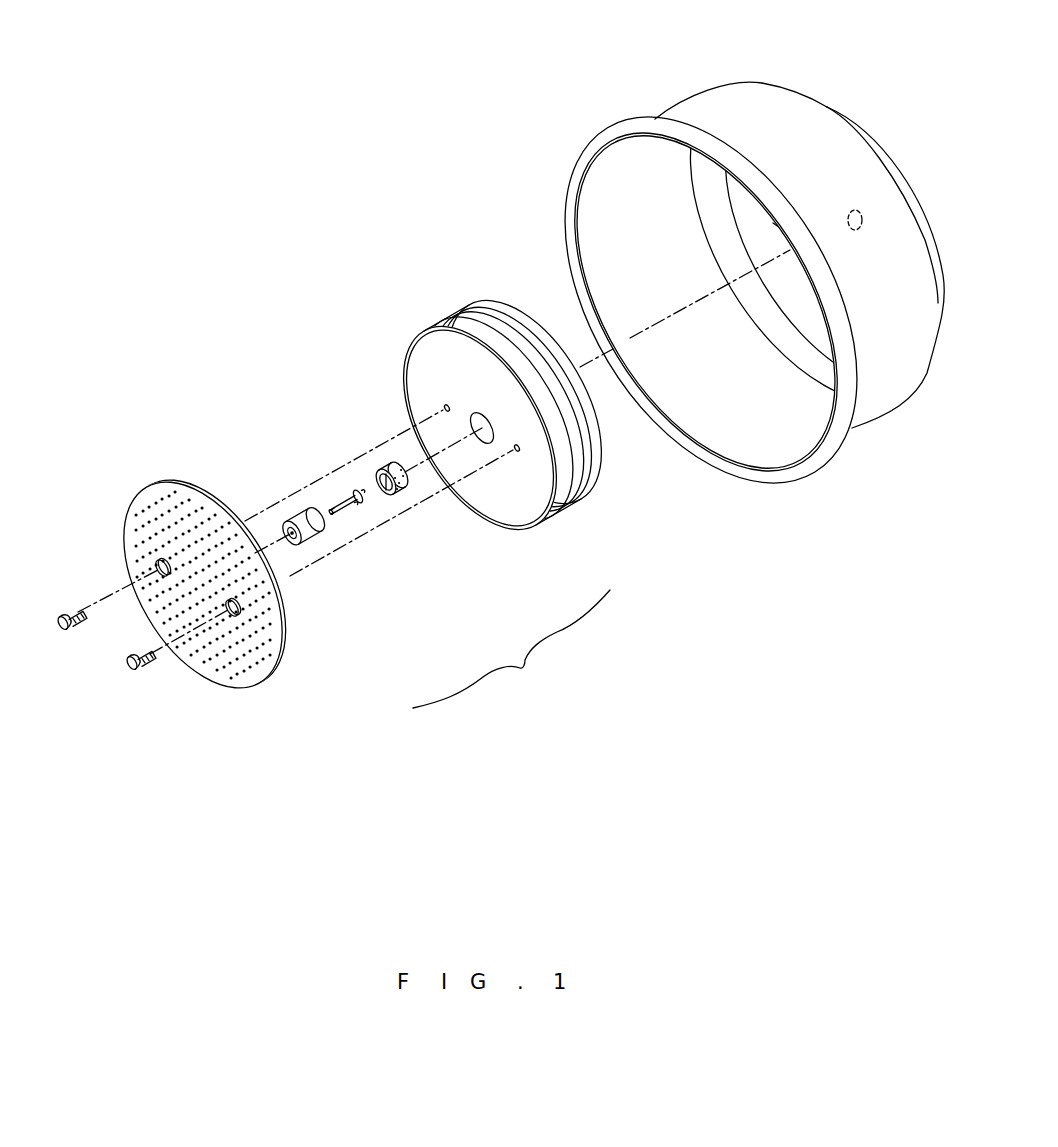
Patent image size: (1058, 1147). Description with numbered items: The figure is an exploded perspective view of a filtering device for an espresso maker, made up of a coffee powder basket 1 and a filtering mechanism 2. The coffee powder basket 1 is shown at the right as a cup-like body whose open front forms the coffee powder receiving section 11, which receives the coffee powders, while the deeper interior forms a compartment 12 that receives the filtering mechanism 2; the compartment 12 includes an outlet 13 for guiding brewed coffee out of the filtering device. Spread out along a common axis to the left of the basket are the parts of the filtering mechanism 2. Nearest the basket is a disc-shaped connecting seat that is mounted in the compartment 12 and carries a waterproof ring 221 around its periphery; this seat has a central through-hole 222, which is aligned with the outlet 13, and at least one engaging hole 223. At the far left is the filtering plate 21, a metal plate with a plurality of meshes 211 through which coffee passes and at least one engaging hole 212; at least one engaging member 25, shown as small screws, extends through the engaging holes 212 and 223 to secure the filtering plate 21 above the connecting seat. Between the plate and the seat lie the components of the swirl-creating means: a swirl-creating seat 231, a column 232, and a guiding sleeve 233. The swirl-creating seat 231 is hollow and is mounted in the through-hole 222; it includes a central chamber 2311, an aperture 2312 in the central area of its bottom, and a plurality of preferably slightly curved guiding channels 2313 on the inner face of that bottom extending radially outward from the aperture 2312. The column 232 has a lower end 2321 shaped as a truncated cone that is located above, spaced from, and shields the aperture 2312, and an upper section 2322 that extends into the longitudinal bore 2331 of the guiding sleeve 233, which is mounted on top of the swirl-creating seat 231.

The coffee powder basket 1 is at (759, 274).
The coffee powder receiving section 11 is at (632, 216).
The compartment 12 is at (752, 228).
The outlet 13 is at (858, 212).
The filtering mechanism 2 is at (545, 697).
The filtering plate 21 is at (378, 448).
The meshes 211 is at (162, 510).
The engaging hole 212 is at (159, 565).
The waterproof ring 221 is at (490, 323).
The through-hole 222 is at (491, 430).
The engaging hole 223 is at (518, 452).
The swirl-creating seat 231 is at (366, 464).
The central chamber 2311 is at (372, 474).
The aperture 2312 is at (393, 473).
The guiding channels 2313 is at (385, 478).
The column 232 is at (349, 521).
The lower end 2321 is at (363, 503).
The upper section 2322 is at (338, 516).
The guiding sleeve 233 is at (301, 549).
The longitudinal bore 2331 is at (292, 540).
The engaging member 25 is at (138, 668).